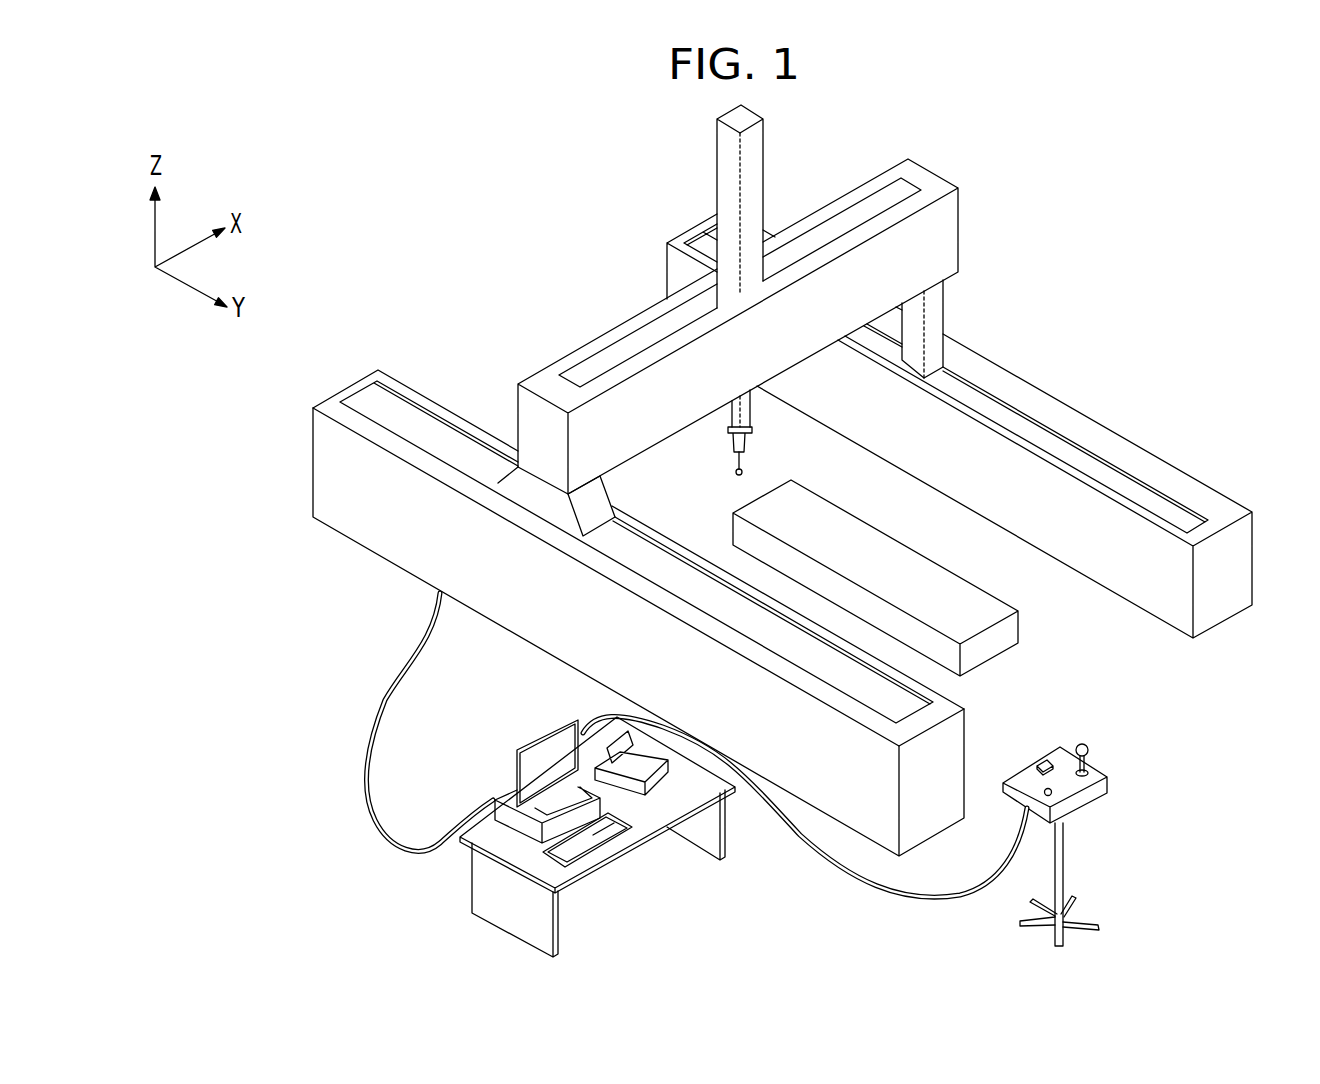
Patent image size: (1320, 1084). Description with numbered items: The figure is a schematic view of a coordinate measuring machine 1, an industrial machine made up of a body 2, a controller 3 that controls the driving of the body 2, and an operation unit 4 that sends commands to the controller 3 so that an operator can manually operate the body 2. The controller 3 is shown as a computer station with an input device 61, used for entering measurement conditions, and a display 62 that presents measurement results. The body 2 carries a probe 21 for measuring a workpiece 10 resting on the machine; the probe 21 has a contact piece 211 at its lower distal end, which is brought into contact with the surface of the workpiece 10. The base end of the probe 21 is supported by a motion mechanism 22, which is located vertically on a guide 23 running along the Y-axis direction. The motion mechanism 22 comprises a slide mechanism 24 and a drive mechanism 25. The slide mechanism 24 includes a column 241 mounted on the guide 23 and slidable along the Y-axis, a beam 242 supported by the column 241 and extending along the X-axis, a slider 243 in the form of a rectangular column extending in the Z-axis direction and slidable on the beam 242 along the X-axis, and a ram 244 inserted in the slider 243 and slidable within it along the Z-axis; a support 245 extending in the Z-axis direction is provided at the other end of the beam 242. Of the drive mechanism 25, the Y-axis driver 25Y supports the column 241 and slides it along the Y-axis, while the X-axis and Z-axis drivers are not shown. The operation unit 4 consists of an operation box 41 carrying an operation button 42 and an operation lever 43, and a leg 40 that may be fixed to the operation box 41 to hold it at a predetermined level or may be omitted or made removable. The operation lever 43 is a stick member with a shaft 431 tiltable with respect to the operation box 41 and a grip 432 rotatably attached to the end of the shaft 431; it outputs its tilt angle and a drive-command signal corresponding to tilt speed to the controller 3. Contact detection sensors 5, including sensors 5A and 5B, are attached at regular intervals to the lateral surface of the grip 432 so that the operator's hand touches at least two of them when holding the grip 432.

The coordinate measuring machine 1 is at (1052, 155).
The body 2 is at (597, 210).
The controller 3 is at (523, 822).
The operation unit 4 is at (1153, 810).
The contact detection sensors 5 is at (1154, 761).
The contact detection sensor 5A is at (1092, 752).
The contact detection sensor 5B is at (1090, 767).
The workpiece 10 is at (1003, 590).
The probe 21 is at (750, 445).
The contact piece 211 is at (745, 470).
The motion mechanism 22 is at (563, 320).
The guide 23 is at (345, 520).
The slide mechanism 24 is at (815, 320).
The column 241 is at (597, 513).
The beam 242 is at (945, 230).
The slider 243 is at (768, 150).
The ram 244 is at (755, 412).
The support 245 is at (930, 312).
The drive mechanism 25 is at (636, 526).
The Y-axis driver 25Y is at (435, 432).
The leg 40 is at (1065, 873).
The operation box 41 is at (1095, 800).
The operation button 42 is at (1040, 760).
The operation lever 43 is at (1147, 669).
The shaft 431 is at (1072, 753).
The grip 432 is at (1089, 745).
The input device 61 is at (590, 855).
The display 62 is at (541, 763).